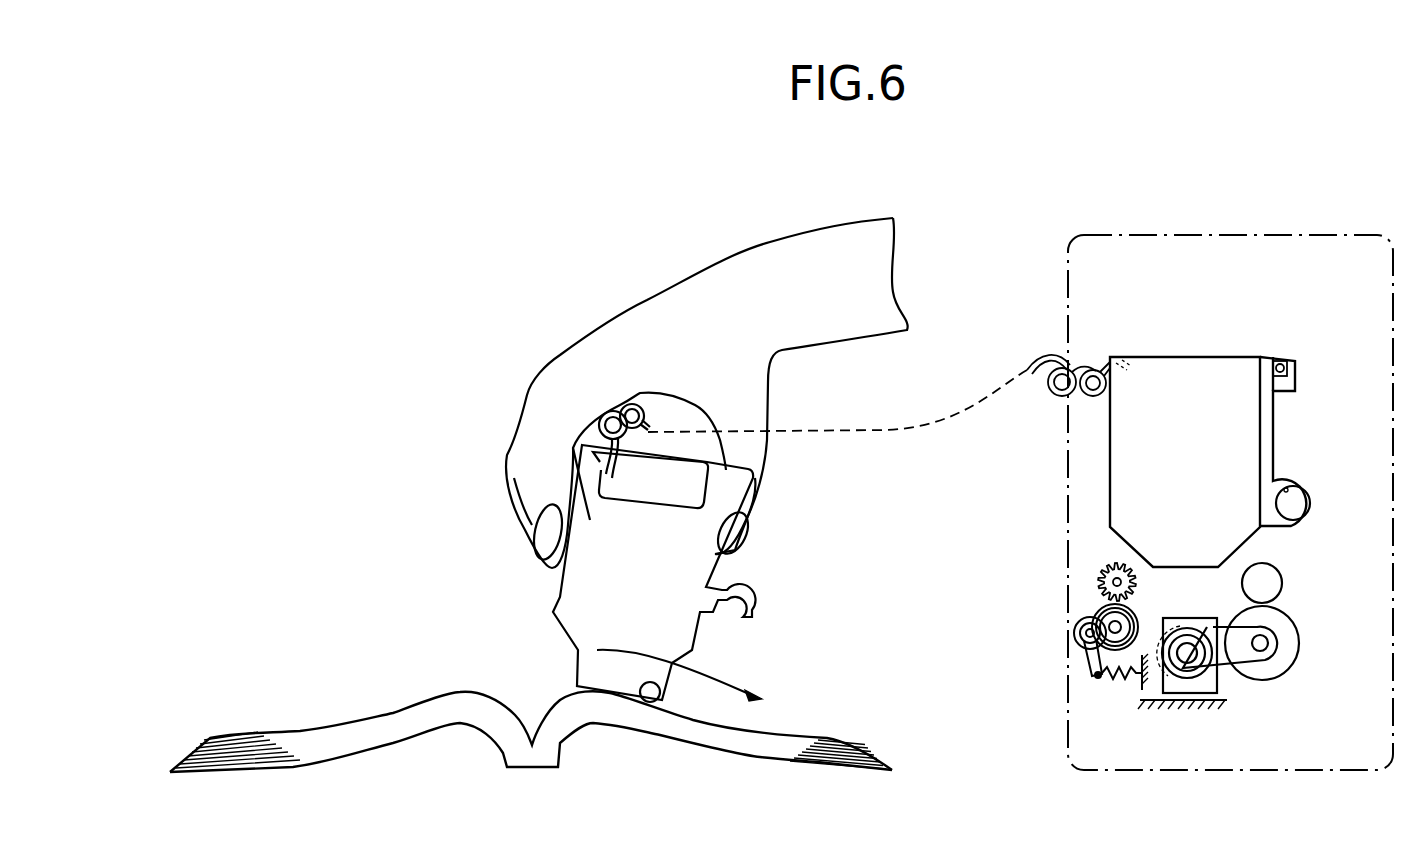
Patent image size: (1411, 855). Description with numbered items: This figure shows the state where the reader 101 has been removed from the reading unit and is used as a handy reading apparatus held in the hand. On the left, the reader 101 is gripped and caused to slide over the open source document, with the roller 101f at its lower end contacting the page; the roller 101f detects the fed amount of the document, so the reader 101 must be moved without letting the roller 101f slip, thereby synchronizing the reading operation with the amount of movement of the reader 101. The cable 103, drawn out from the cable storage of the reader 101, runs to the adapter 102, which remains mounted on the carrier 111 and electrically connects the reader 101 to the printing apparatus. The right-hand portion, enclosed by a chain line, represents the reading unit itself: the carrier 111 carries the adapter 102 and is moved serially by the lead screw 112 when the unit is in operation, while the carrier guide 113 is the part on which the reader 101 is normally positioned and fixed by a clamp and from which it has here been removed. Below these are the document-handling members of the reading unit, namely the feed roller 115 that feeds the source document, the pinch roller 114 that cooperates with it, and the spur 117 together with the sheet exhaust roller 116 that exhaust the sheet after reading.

The reader 101 is at (565, 598).
The roller 101f is at (647, 703).
The adapter 102 is at (1177, 360).
The cable 103 is at (885, 430).
The carrier 111 is at (1270, 433).
The lead screw 112 is at (1302, 500).
The carrier guide 113 is at (1280, 362).
The pinch roller 114 is at (1273, 580).
The feed roller 115 is at (1263, 673).
The sheet exhaust roller 116 is at (1137, 617).
The spur 117 is at (1097, 580).